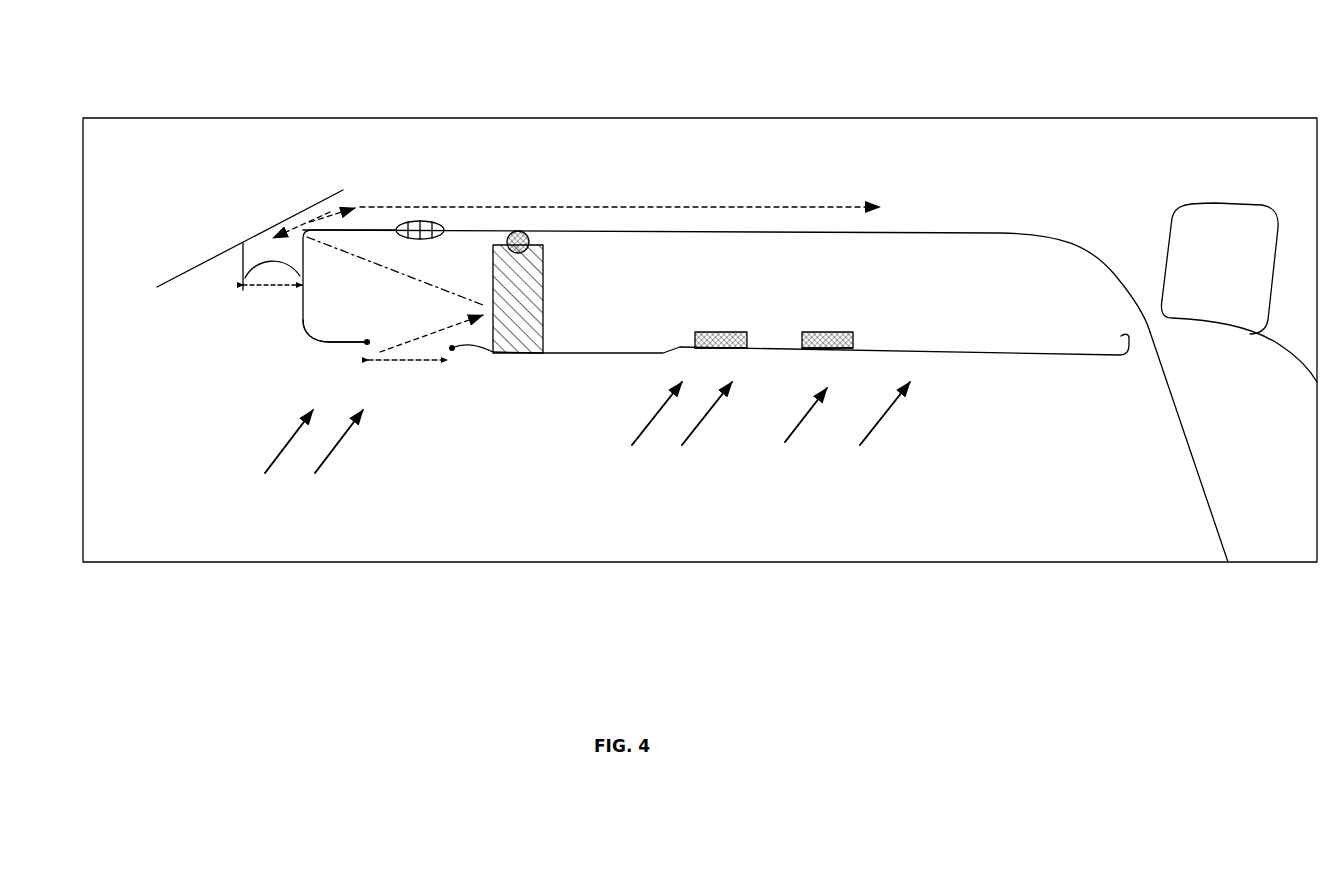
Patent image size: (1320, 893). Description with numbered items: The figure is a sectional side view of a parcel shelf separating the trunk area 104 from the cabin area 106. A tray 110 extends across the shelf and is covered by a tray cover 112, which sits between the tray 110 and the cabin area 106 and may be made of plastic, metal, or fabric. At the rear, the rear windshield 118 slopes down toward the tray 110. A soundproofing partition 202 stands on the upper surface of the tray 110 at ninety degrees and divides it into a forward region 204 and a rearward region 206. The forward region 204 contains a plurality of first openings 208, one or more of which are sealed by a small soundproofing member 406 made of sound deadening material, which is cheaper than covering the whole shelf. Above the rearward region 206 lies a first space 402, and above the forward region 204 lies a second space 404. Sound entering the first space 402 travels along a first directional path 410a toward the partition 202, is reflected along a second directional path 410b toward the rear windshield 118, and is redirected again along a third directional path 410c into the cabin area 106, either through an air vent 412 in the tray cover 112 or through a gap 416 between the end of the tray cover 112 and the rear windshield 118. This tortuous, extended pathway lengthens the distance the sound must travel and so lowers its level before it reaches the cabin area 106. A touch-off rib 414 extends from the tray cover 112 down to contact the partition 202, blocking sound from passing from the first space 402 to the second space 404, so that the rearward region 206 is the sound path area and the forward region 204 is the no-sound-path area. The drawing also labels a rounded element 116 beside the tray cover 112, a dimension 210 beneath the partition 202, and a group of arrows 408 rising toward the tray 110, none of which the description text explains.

The trunk area 104 is at (685, 505).
The cabin area 106 is at (763, 152).
The tray 110 is at (1007, 353).
The tray cover 112 is at (998, 235).
The seat headrest 116 is at (1238, 203).
The rear windshield 118 is at (313, 203).
The soundproofing partition 202 is at (522, 330).
The forward region 204 is at (617, 357).
The rearward region 206 is at (345, 343).
The first openings 208 is at (827, 353).
The gap distance 210 is at (417, 363).
The first space 402 is at (357, 300).
The second space 404 is at (1042, 307).
The soundproofing member 406 is at (823, 333).
The sound waves 408 is at (875, 430).
The first directional path 410a is at (450, 327).
The second directional path 410b is at (418, 285).
The third directional path 410c is at (317, 227).
The air vent 412 is at (413, 222).
The rib 414 is at (530, 243).
The gap 416 is at (277, 287).